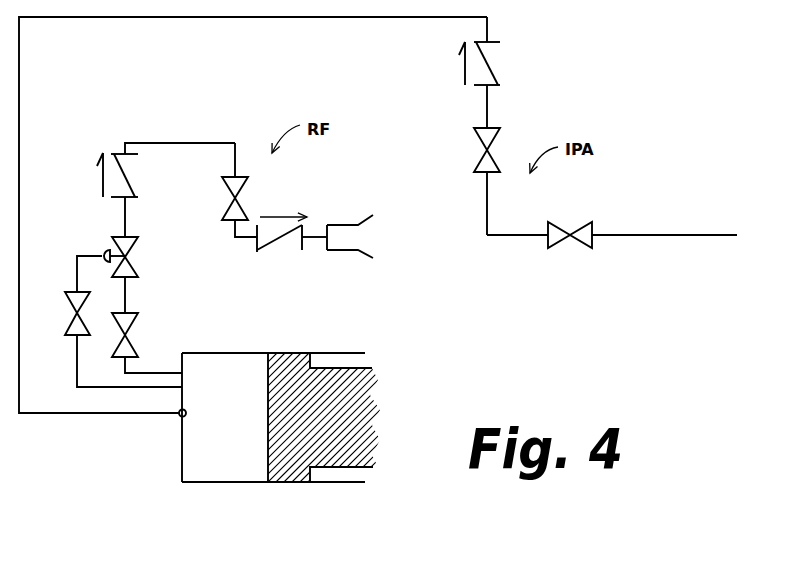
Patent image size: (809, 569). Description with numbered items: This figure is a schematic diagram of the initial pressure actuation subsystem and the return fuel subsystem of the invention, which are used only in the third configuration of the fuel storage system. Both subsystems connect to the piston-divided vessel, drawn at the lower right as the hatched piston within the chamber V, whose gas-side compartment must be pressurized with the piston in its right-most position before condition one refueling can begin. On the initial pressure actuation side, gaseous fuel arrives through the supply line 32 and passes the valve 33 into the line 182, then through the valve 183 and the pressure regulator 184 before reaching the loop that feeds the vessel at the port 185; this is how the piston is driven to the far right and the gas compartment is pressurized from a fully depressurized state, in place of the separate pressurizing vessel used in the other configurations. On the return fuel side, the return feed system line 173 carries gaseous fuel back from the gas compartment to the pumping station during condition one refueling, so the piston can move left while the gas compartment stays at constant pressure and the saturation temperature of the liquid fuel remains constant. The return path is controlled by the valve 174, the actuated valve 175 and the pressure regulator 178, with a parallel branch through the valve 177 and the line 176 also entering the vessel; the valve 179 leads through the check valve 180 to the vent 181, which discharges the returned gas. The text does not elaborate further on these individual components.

The IPA supply line 32 is at (675, 234).
The IPA supply valve 33 is at (570, 243).
The return feed system line 173 is at (123, 365).
The valve 174 is at (116, 317).
The actuated valve 175 is at (107, 256).
The chamber inlet line 176 is at (73, 378).
The valve 177 is at (63, 313).
The pressure regulator 178 is at (166, 190).
The valve 179 is at (226, 190).
The check valve 180 is at (292, 241).
The exhaust vent 181 is at (362, 236).
The IPA line 182 is at (487, 219).
The valve 183 is at (498, 150).
The pressure regulator 184 is at (495, 72).
The chamber port 185 is at (253, 219).
The chamber volume V is at (232, 482).